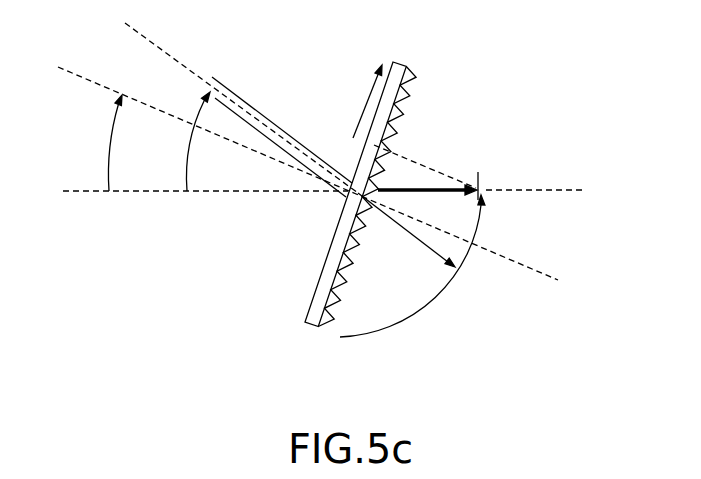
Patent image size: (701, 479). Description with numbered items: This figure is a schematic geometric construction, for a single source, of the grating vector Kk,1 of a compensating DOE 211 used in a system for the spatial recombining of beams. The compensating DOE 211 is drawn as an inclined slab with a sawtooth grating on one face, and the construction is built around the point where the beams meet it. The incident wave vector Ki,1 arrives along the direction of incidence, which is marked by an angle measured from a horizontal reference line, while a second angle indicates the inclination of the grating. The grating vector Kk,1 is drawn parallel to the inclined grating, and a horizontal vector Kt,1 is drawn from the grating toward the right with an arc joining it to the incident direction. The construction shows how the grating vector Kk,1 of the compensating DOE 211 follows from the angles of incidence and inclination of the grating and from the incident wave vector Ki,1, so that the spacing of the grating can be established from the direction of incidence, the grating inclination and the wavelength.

The compensating DOE 211 is at (302, 328).
The grating vector Kk,1 is at (333, 68).
The transmitted wave vector Kt,1 is at (441, 133).
The incident wave vector Ki,1 is at (395, 237).